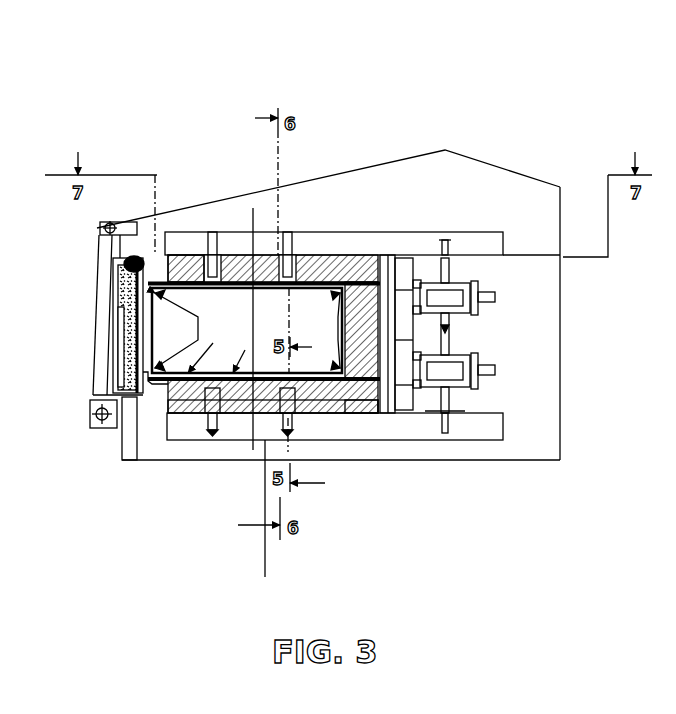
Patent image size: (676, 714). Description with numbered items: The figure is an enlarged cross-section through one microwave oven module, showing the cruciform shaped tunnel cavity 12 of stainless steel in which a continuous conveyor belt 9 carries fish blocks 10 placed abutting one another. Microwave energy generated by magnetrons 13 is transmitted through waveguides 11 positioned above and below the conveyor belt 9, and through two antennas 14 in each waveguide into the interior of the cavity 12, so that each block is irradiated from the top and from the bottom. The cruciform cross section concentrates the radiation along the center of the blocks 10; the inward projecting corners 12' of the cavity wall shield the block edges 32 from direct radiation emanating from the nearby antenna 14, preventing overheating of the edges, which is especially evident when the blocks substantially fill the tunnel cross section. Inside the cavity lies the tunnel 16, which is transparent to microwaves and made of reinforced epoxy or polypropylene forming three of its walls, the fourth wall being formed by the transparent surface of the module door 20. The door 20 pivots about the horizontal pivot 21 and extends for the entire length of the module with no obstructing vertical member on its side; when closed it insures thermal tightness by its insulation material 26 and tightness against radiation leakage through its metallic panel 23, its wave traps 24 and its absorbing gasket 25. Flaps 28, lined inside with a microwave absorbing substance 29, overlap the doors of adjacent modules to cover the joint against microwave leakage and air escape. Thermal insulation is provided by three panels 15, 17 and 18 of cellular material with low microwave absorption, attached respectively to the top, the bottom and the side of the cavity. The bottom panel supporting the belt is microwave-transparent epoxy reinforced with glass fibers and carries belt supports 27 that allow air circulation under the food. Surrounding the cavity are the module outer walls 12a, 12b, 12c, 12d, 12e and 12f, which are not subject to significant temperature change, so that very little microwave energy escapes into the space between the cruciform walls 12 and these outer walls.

The conveyor belt 9 is at (245, 350).
The fish blocks 10 is at (247, 329).
The waveguides 11 is at (410, 240).
The cruciform shaped tunnel cavity 12 is at (267, 178).
The module outer wall 12a is at (193, 265).
The module outer wall 12b is at (415, 157).
The module outer wall 12c is at (533, 230).
The module outer wall 12d is at (560, 500).
The module outer wall 12e is at (222, 415).
The module outer wall 12f is at (137, 460).
The inward projecting corners 12' is at (222, 313).
The magnetrons 13 is at (477, 362).
The antennas 14 is at (320, 251).
The thermal insulation panel 15 is at (145, 262).
The tunnel 16 is at (338, 413).
The thermal insulation panel 17 is at (370, 413).
The thermal insulation panel 18 is at (310, 577).
The module door 20 is at (113, 292).
The horizontal pivot 21 is at (100, 430).
The metallic panel 23 is at (115, 350).
The wave traps 24 is at (115, 258).
The absorbing gasket 25 is at (135, 258).
The insulation material 26 is at (132, 373).
The belt supports 27 is at (213, 343).
The flaps 28 is at (98, 388).
The microwave absorbing substance 29 is at (115, 322).
The block edges 32 is at (233, 315).